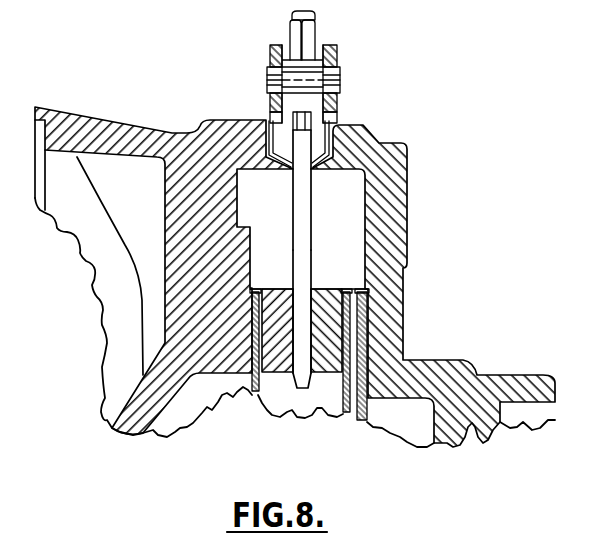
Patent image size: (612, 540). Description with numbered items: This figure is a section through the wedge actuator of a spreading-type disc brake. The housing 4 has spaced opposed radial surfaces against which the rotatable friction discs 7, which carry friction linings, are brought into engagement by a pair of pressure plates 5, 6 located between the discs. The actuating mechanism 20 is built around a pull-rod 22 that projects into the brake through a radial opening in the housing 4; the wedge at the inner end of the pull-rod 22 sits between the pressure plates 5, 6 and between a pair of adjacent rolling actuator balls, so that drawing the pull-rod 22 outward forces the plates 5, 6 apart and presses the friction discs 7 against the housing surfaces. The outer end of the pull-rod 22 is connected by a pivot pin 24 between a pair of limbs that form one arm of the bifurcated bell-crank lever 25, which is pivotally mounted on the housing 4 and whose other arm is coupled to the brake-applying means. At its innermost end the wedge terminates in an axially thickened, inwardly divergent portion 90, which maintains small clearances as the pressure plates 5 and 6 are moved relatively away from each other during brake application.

The housing 4 is at (393, 246).
The pressure plate 5 is at (282, 382).
The pressure plate 6 is at (340, 375).
The friction discs 7 is at (253, 289).
The actuating mechanism 20 is at (300, 253).
The pull-rod 22 is at (302, 208).
The pivot pin 24 is at (340, 73).
The bell-crank lever 25 is at (308, 118).
The inwardly divergent portion 90 is at (302, 386).